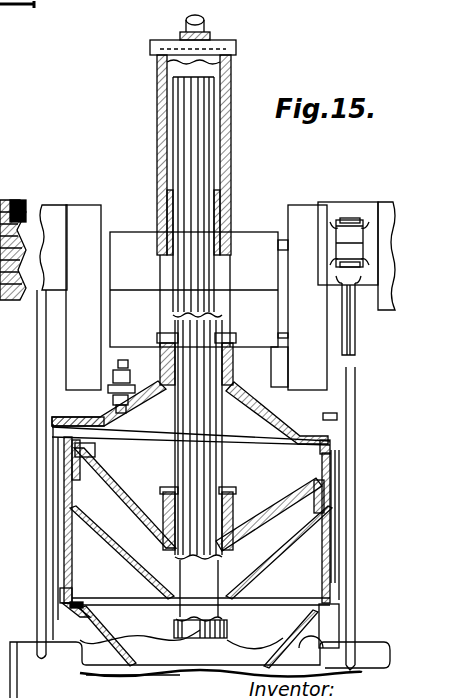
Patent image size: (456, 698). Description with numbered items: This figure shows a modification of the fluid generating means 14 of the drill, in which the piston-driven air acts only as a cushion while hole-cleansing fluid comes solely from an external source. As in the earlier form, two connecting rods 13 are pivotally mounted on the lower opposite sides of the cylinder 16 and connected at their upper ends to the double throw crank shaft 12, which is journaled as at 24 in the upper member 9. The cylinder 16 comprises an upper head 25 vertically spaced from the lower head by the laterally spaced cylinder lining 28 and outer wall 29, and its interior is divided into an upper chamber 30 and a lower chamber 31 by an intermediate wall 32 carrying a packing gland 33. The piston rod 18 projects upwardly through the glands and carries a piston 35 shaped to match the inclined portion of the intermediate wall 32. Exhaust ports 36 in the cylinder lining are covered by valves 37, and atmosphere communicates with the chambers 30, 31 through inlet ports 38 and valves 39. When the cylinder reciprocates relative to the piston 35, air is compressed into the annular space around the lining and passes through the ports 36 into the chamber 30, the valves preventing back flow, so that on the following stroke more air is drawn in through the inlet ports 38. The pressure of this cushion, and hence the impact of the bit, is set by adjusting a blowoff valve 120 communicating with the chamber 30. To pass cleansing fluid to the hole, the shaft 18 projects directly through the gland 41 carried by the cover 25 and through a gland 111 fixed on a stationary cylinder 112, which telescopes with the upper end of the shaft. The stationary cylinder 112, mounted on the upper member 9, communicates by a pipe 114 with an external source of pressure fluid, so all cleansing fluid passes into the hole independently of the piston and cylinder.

The pipe 114 is at (204, 27).
The stationary cylinder 112 is at (157, 150).
The gland 111 is at (228, 228).
The journal 24 is at (133, 247).
The blowoff valve 120 is at (125, 360).
The double throw crank shaft 12 is at (318, 232).
The upper member 9 is at (268, 373).
The gland 41 is at (222, 334).
The upper head 25 is at (260, 401).
The upper chamber 30 is at (277, 457).
The connecting rods 13 is at (355, 427).
The fluid generating means 14 is at (343, 420).
The valves 37 is at (66, 557).
The exhaust ports 36 is at (60, 577).
The valves 39 is at (70, 470).
The lower chamber 31 is at (62, 590).
The inlet ports 38 is at (80, 425).
The piston 35 is at (88, 513).
The packing gland 33 is at (173, 484).
The intermediate wall 32 is at (258, 510).
The piston rod 18 is at (197, 633).
The cylinder 16 is at (340, 523).
The cylinder lining 28 is at (328, 547).
The outer wall 29 is at (338, 567).